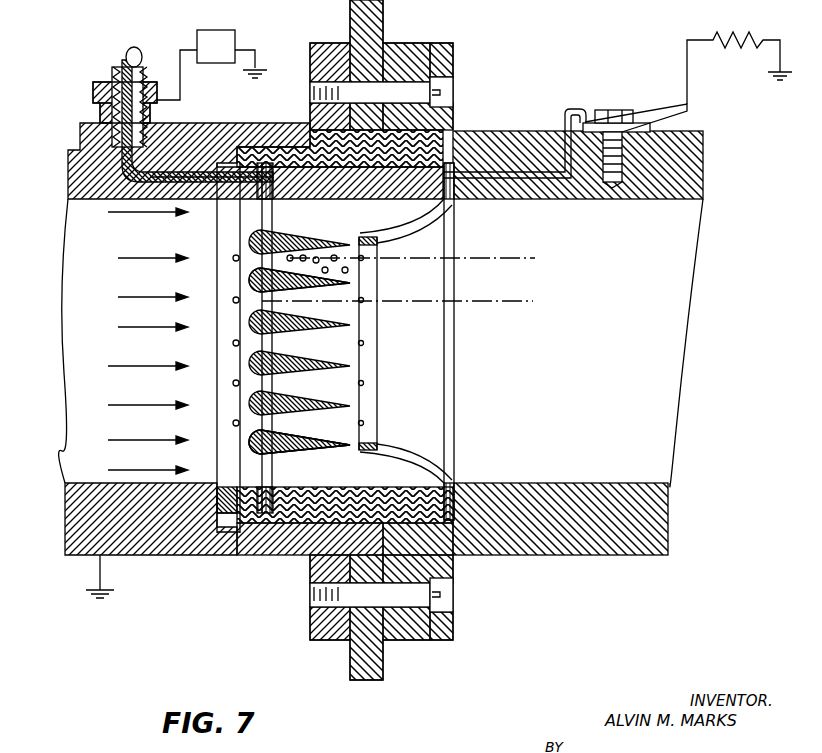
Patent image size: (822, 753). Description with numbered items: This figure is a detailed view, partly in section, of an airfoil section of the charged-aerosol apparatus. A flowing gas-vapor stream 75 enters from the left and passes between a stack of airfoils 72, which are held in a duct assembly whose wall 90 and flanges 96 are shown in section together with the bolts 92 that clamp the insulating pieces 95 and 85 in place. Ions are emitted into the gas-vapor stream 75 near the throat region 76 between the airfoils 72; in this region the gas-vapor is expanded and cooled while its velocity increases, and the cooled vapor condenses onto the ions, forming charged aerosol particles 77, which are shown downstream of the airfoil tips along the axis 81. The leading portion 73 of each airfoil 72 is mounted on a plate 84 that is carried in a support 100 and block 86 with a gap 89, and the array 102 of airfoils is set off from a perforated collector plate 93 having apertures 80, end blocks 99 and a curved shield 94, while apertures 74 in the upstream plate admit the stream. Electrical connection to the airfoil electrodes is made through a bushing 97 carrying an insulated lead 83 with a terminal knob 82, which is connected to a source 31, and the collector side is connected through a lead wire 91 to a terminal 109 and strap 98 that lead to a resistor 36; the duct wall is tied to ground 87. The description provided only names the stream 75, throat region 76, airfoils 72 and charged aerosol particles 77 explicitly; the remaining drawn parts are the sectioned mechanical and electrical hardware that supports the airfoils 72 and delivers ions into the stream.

The voltage source 31 is at (212, 65).
The resistor 36 is at (740, 37).
The airfoils 72 is at (306, 334).
The electrode nose 73 is at (250, 279).
The apertures 74 is at (233, 258).
The gas-vapor stream 75 is at (122, 258).
The throat region 76 is at (270, 426).
The charged aerosol particles 77 is at (343, 243).
The collector apertures 80 is at (364, 343).
The axis 81 is at (530, 258).
The terminal knob 82 is at (142, 53).
The insulated lead 83 is at (125, 60).
The electrode plate 84 is at (262, 533).
The lower insulator 85 is at (313, 490).
The support block 86 is at (217, 514).
The ground 87 is at (99, 600).
The plate gap 89 is at (233, 533).
The duct wall 90 is at (193, 167).
The lead wire 91 is at (533, 131).
The flange bolt 92 is at (447, 97).
The collector plate 93 is at (380, 390).
The curved shield 94 is at (418, 457).
The insulator 95 is at (287, 157).
The flange 96 is at (323, 53).
The bushing 97 is at (93, 97).
The terminal strap 98 is at (643, 120).
The plate end block 99 is at (370, 452).
The electrode support 100 is at (212, 476).
The electrode array 102 is at (311, 458).
The terminal 109 is at (560, 113).